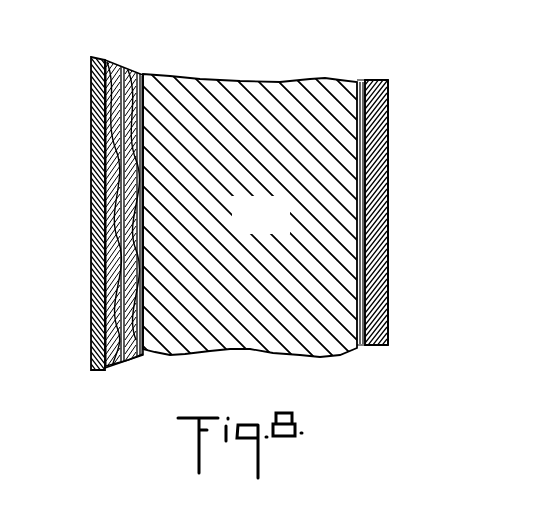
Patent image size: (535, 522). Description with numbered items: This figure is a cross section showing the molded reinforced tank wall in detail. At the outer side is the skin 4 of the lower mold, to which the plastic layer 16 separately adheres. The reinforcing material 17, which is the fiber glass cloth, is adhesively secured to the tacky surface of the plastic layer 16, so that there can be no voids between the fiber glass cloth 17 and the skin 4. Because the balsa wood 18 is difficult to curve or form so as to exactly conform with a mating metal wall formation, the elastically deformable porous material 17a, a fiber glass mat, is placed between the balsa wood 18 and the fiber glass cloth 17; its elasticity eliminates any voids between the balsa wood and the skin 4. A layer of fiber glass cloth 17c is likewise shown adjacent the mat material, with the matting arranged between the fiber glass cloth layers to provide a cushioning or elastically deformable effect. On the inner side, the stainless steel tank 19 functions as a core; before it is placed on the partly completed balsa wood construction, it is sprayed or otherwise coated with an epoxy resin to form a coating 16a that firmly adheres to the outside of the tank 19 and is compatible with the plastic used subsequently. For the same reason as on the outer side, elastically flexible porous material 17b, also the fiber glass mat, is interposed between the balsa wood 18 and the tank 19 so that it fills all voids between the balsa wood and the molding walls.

The skin 4 is at (98, 270).
The plastic layer 16 is at (112, 74).
The coating 16a is at (372, 177).
The reinforcing material 17 is at (118, 77).
The elastically deformable material 17a is at (125, 360).
The elastically flexible porous material 17b is at (365, 81).
The fiber glass cloth 17c is at (128, 77).
The balsa wood 18 is at (272, 227).
The stainless steel tank 19 is at (390, 258).